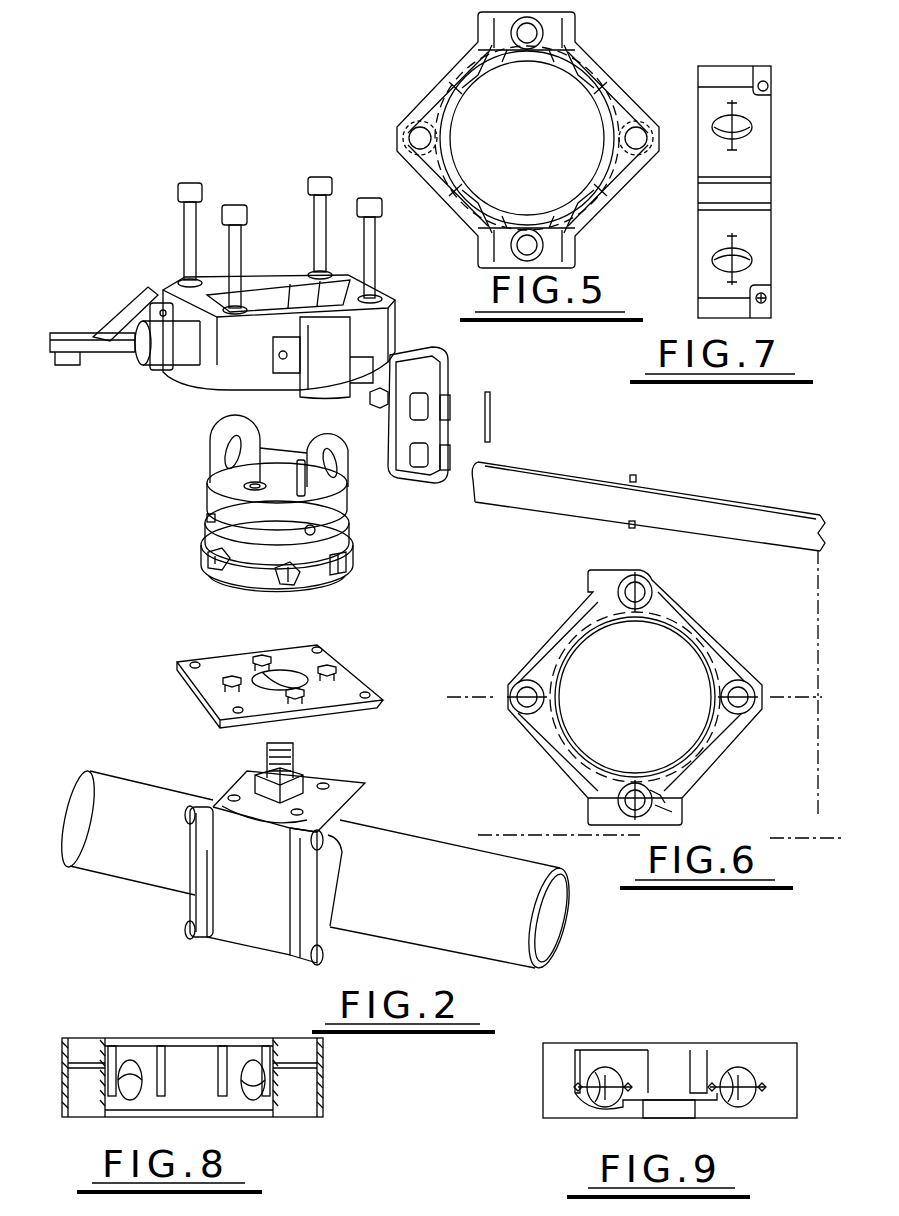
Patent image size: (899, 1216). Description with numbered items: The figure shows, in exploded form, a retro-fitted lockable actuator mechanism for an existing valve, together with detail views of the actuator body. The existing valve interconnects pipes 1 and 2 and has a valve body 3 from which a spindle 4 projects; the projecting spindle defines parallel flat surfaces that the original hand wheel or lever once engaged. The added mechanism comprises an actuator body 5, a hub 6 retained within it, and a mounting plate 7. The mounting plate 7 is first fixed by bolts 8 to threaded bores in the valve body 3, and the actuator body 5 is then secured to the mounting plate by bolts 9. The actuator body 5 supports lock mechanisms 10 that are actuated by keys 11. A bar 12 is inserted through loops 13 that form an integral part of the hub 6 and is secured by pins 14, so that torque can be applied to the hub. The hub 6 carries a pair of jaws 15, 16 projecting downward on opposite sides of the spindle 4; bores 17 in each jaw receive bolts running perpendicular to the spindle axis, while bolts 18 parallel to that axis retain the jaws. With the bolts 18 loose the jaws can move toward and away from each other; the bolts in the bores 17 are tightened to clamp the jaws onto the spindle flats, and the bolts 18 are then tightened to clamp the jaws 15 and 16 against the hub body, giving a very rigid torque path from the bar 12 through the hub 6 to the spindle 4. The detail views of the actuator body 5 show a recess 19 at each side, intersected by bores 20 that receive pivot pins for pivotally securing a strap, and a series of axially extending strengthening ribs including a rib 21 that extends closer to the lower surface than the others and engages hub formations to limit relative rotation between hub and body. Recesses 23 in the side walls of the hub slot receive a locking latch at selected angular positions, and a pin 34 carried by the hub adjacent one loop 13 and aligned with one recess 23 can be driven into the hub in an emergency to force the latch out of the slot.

In FIG. 2, the pipe 1 is at (108, 830).
In FIG. 2, the pipe 2 is at (460, 917).
In FIG. 2, the valve body 3 is at (233, 897).
In FIG. 2, the spindle 4 is at (263, 756).
In FIG. 2, the actuator body 5 is at (222, 355).
In FIG. 2, the hub 6 is at (217, 492).
In FIG. 6, the mounting plate 7 is at (818, 572).
In FIG. 2, the mounting plate 7 is at (202, 682).
In FIG. 6, the bolts 8 is at (463, 697).
In FIG. 2, the bolts 8 is at (335, 672).
In FIG. 6, the bolts 9 is at (478, 835).
In FIG. 2, the bolts 9 is at (190, 248).
In FIG. 2, the lock mechanisms 10 is at (157, 370).
In FIG. 2, the keys 11 is at (88, 338).
In FIG. 2, the bar 12 is at (735, 500).
In FIG. 2, the loops 13 is at (227, 425).
In FIG. 2, the pins 14 is at (492, 400).
In FIG. 2, the jaw 15 is at (318, 573).
In FIG. 2, the jaw 16 is at (338, 560).
In FIG. 2, the bores 17 is at (213, 560).
In FIG. 2, the bolts 18 is at (257, 483).
In FIG. 9, the recess 19 is at (665, 1113).
In FIG. 7, the bores 20 is at (767, 90).
In FIG. 8, the rib 21 is at (108, 1053).
In FIG. 2, the recesses 23 is at (208, 517).
In FIG. 2, the pin 34 is at (307, 475).